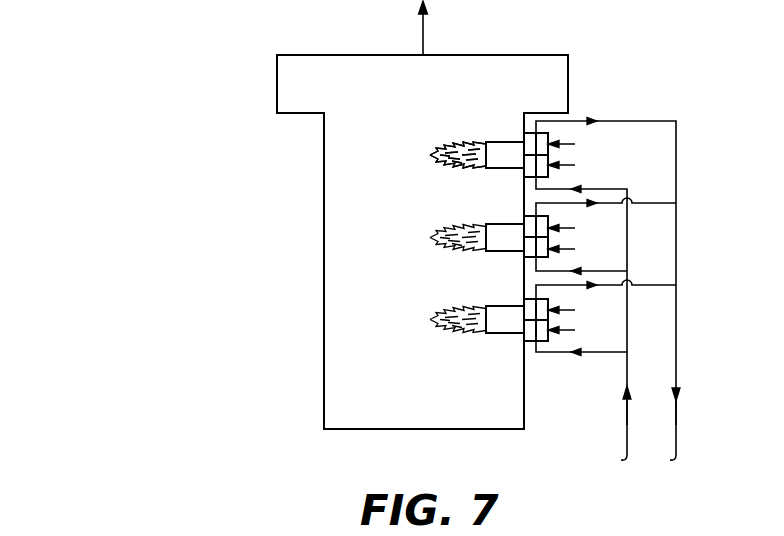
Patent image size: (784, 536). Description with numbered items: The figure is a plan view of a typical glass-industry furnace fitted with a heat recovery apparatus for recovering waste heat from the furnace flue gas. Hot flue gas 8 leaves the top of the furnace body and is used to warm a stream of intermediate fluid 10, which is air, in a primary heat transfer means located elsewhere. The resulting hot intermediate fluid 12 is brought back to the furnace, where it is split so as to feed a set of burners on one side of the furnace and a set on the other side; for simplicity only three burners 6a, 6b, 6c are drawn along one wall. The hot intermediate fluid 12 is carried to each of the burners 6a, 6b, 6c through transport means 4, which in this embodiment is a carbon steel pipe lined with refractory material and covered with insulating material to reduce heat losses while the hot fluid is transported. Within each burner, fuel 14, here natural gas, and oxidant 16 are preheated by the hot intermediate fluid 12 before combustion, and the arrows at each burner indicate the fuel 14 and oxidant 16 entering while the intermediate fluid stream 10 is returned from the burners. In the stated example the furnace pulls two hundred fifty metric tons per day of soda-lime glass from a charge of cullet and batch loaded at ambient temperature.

The transport means 4 is at (627, 412).
The burner 6a is at (497, 168).
The burner 6b is at (497, 251).
The burner 6c is at (502, 333).
The hot flue gas 8 is at (423, 30).
The intermediate fluid stream 10 is at (614, 306).
The hot intermediate fluid 12 is at (589, 335).
The fuel 14 is at (577, 228).
The oxidant 16 is at (577, 248).